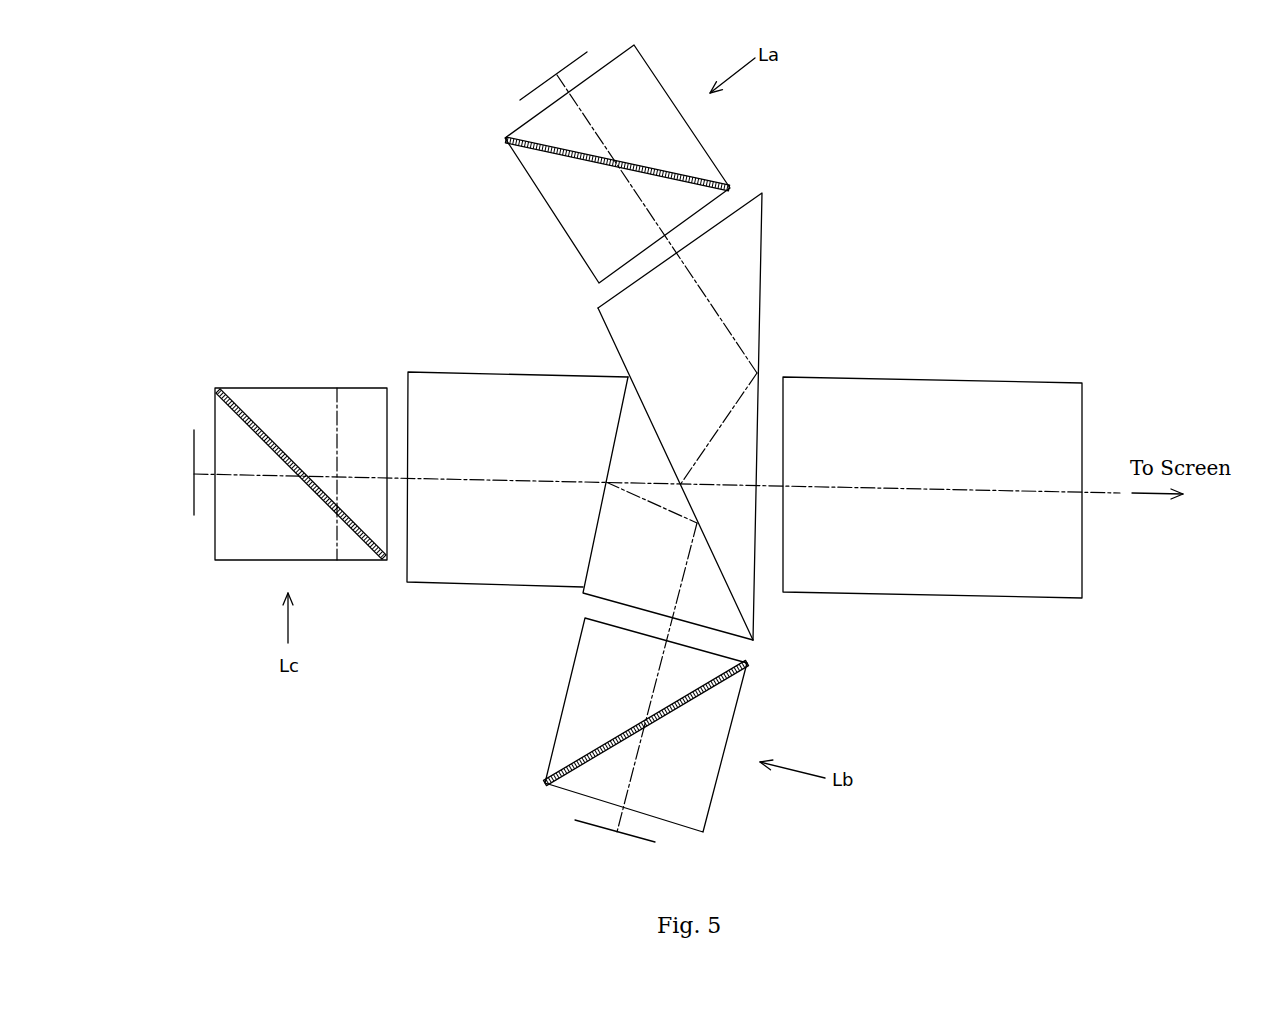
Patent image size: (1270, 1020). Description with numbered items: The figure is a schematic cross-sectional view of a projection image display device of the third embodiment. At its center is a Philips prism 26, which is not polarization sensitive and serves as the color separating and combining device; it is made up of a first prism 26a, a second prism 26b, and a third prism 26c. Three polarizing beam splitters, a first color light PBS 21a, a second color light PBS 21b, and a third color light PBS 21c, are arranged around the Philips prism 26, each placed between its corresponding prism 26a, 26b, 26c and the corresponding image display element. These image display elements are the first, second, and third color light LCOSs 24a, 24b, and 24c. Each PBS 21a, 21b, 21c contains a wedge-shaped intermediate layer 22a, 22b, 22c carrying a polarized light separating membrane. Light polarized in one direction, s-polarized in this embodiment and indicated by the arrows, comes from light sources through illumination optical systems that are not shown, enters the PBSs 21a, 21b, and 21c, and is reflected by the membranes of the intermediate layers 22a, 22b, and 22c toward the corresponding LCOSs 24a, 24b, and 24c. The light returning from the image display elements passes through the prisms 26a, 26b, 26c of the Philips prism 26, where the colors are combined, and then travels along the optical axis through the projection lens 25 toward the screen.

The first color light PBS 21a is at (708, 167).
The wedge-shaped intermediate layer 22a is at (538, 150).
The first color light LCOS 24a is at (529, 96).
The second color light PBS 21b is at (700, 818).
The wedge-shaped intermediate layer 22b is at (584, 756).
The second color light LCOS 24b is at (598, 825).
The third color light PBS 21c is at (222, 543).
The wedge-shaped intermediate layer 22c is at (345, 530).
The third color light LCOS 24c is at (194, 500).
The projection lens 25 is at (912, 588).
The Philips prism 26 is at (619, 435).
The first prism 26a is at (750, 268).
The second prism 26b is at (717, 623).
The third prism 26c is at (506, 381).